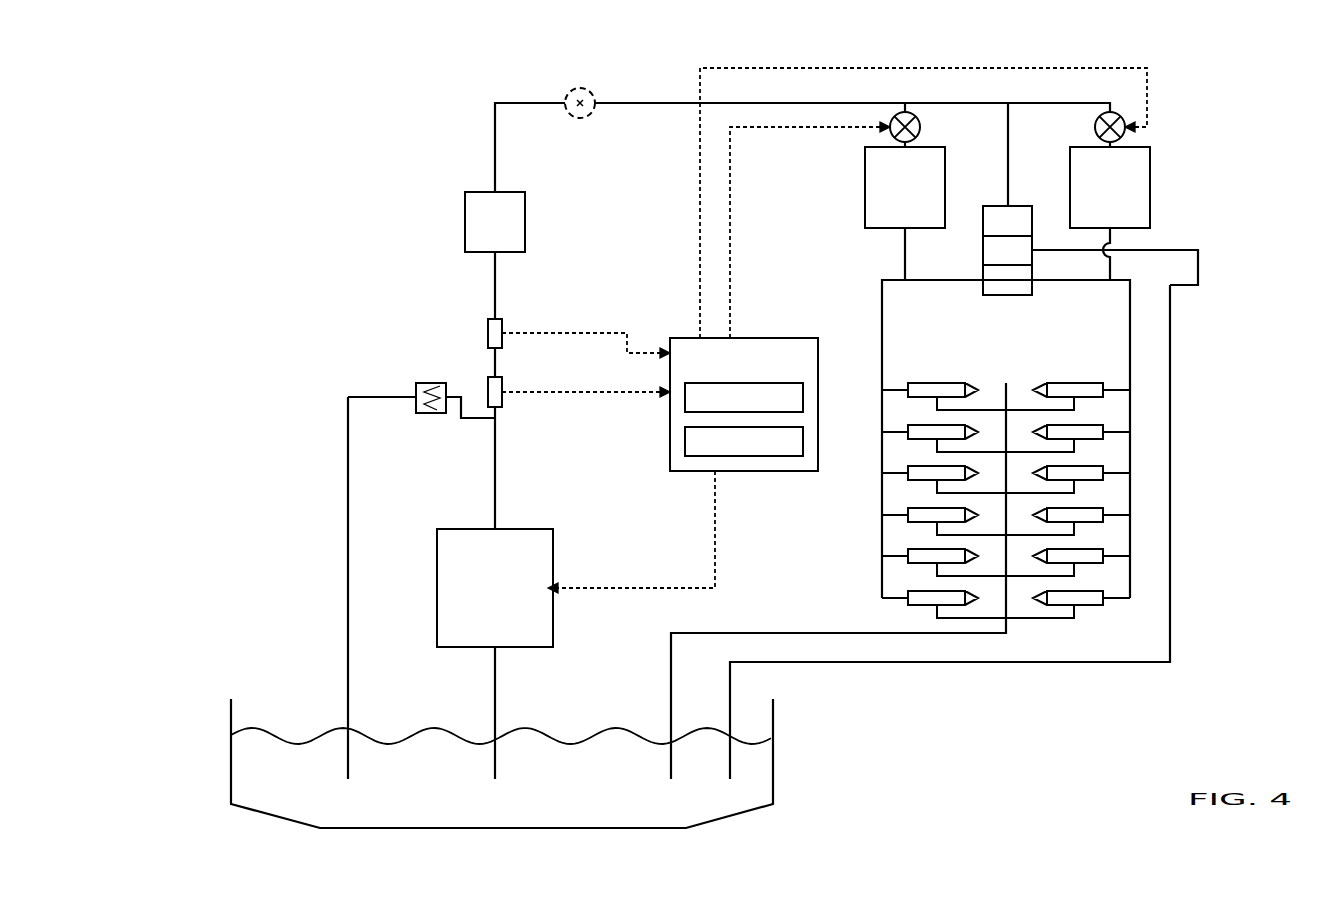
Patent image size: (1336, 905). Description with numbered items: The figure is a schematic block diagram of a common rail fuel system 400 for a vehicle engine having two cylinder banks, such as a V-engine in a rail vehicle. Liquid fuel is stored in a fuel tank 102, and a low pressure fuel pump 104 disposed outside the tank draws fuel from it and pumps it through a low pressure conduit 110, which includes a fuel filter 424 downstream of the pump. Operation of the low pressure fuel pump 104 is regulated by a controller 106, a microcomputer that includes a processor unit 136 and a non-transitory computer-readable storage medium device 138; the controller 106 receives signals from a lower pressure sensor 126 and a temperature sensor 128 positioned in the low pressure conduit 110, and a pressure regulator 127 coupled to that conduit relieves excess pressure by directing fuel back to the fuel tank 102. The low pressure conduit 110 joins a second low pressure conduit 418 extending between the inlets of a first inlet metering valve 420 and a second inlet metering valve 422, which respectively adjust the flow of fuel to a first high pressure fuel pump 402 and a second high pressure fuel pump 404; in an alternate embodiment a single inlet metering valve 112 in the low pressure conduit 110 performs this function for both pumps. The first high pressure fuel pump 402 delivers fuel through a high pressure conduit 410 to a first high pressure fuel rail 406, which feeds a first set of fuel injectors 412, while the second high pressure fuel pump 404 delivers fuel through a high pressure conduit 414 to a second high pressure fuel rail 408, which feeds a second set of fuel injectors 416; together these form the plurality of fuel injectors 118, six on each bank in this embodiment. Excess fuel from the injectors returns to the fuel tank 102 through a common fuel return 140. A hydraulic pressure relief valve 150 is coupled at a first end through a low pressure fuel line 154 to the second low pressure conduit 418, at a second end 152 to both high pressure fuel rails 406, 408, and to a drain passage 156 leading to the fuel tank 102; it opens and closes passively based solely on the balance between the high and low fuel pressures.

The common rail fuel system 400 is at (1196, 120).
The fuel tank 102 is at (230, 762).
The low pressure fuel pump 104 is at (495, 588).
The controller 106 is at (847, 330).
The low pressure conduit 110 is at (496, 487).
The single inlet metering valve 112 is at (588, 117).
The fuel injectors 118 is at (945, 383).
The lower pressure sensor 126 is at (503, 377).
The pressure regulator 127 is at (431, 383).
The temperature sensor 128 is at (503, 318).
The processor unit 136 is at (744, 397).
The non-transitory computer-readable storage medium device 138 is at (744, 441).
The common fuel return 140 is at (818, 632).
The hydraulic pressure relief valve 150 is at (1022, 206).
The second end of pressure relief valve 152 is at (1004, 297).
The low pressure fuel line 154 is at (1007, 163).
The drain passage 156 is at (1171, 571).
The first high pressure fuel pump 402 is at (905, 187).
The second high pressure fuel pump 404 is at (1110, 213).
The first high pressure fuel rail 406 is at (883, 340).
The second high pressure fuel rail 408 is at (1129, 340).
The high pressure conduit 410 is at (904, 268).
The first set of fuel injectors 412 is at (940, 357).
The high pressure conduit 414 is at (1111, 268).
The second set of fuel injectors 416 is at (1069, 349).
The second low pressure conduit 418 is at (963, 103).
The first inlet metering valve 420 is at (919, 133).
The second inlet metering valve 422 is at (1094, 122).
The fuel filter 424 is at (515, 177).